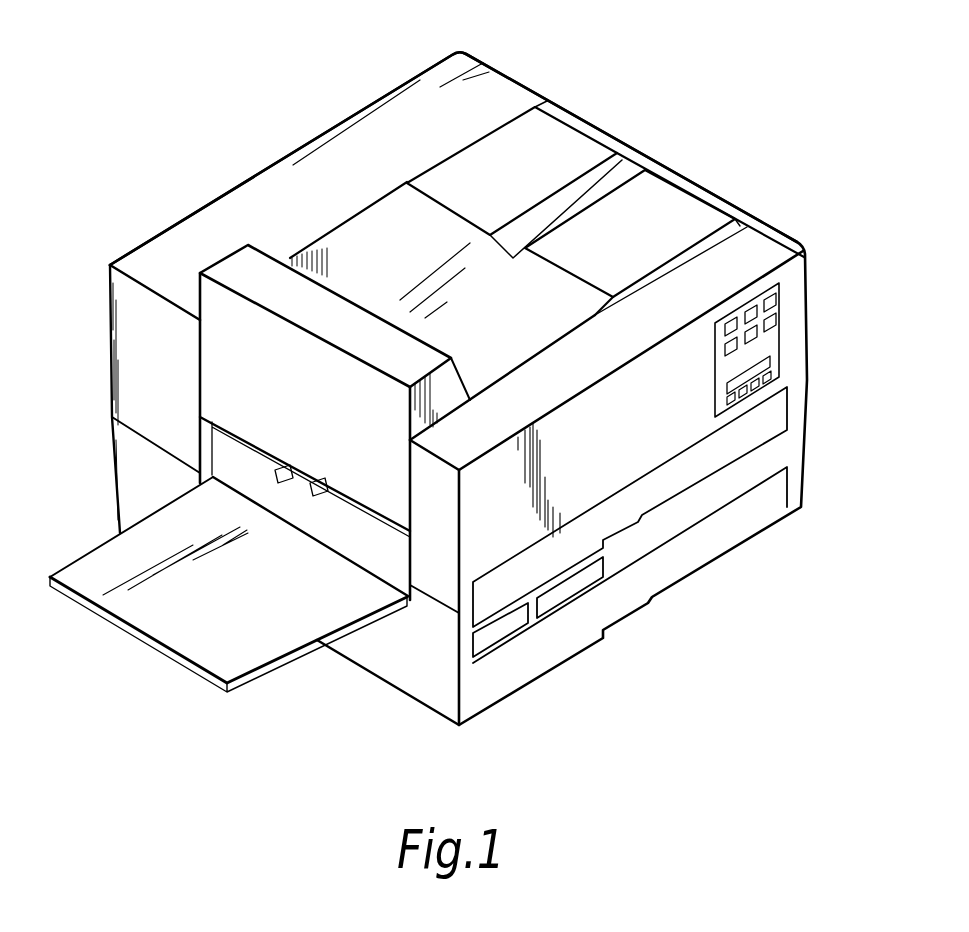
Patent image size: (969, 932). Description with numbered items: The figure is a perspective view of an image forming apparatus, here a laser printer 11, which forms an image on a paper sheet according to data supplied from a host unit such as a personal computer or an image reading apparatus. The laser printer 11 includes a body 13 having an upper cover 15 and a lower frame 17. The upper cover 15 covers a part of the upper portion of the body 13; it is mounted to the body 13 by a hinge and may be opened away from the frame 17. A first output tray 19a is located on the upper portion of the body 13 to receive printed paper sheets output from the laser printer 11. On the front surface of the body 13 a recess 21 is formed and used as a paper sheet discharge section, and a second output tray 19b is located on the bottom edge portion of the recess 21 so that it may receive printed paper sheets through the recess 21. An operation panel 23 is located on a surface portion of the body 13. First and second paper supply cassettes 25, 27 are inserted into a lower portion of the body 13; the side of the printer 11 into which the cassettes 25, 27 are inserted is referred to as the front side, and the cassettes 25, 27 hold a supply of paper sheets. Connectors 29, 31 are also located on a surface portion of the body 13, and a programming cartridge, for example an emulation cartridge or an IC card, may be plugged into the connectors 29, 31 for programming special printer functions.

The laser printer 11 is at (228, 128).
The body 13 is at (505, 68).
The upper cover 15 is at (108, 362).
The lower frame 17 is at (108, 492).
The first output tray 19a is at (362, 250).
The second output tray 19b is at (145, 645).
The recess 21 is at (365, 548).
The operation panel 23 is at (773, 338).
The first paper supply cassette 25 is at (776, 414).
The second paper supply cassette 27 is at (770, 500).
The connector 29 is at (510, 622).
The connector 31 is at (568, 590).